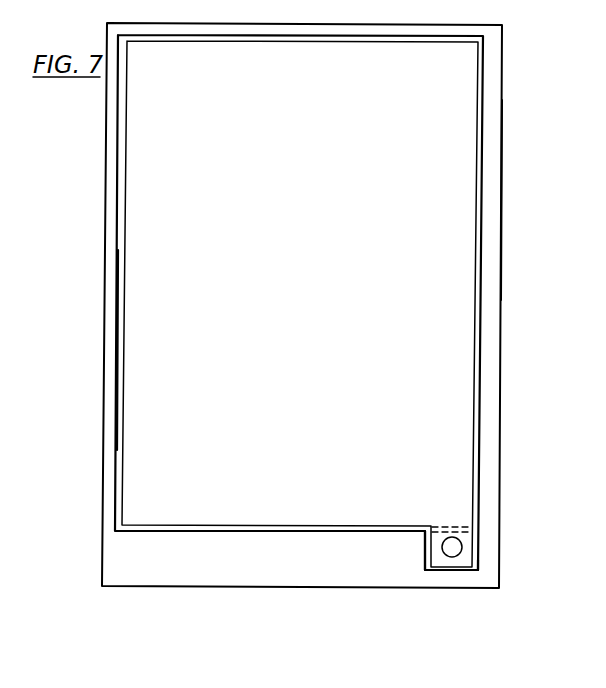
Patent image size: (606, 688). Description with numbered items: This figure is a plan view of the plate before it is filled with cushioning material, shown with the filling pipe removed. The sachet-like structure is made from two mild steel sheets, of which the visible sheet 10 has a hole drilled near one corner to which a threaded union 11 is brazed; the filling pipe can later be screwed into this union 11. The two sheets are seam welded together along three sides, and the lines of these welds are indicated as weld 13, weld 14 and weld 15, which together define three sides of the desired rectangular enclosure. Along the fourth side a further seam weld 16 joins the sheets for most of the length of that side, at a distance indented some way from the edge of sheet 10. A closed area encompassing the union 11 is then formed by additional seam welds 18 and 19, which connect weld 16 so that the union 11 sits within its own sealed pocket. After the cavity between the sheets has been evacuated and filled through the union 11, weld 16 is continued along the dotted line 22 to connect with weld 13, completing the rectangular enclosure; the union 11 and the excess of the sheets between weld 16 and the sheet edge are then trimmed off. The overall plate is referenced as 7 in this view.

The substrate sheet 7 is at (228, 588).
The sheet 10 is at (493, 207).
The threaded union 11 is at (462, 546).
The seam weld 13 is at (482, 154).
The seam weld 14 is at (435, 43).
The seam weld 15 is at (118, 352).
The seam weld 16 is at (180, 531).
The seam weld 18 is at (424, 551).
The seam weld 19 is at (478, 573).
The dotted line 22 is at (449, 527).